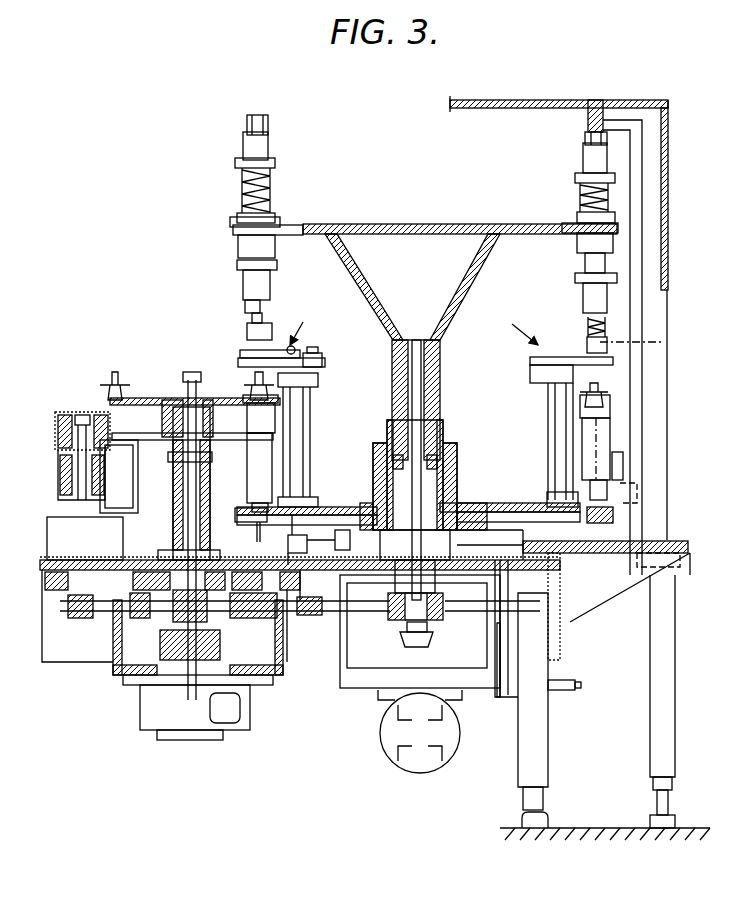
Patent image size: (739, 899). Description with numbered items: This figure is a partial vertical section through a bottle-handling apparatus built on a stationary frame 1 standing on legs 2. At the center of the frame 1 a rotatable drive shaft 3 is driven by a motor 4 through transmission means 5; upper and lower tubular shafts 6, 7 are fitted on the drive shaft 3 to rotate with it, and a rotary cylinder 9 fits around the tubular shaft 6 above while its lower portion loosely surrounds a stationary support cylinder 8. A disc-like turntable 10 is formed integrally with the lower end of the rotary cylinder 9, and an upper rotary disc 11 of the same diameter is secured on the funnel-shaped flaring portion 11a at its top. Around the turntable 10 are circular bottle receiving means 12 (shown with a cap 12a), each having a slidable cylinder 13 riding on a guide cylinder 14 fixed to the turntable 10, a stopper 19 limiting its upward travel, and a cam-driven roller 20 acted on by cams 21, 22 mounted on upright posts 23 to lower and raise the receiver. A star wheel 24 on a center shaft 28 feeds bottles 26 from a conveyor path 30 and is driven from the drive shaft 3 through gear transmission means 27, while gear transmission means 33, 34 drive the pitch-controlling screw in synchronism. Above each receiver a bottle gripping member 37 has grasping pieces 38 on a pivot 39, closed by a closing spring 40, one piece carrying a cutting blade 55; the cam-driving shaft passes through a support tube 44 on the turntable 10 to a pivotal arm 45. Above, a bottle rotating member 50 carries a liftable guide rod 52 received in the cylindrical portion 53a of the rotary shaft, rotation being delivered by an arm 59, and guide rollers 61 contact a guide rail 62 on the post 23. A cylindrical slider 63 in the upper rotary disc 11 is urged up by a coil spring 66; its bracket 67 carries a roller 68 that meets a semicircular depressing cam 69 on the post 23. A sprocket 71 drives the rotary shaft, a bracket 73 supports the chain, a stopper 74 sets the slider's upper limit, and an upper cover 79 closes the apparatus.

The stationary frame 1 is at (565, 560).
The legs 2 is at (650, 748).
The rotatable drive shaft 3 is at (395, 605).
The motor 4 is at (395, 735).
The transmission means 5 is at (430, 636).
The upper tubular shaft 6 is at (422, 377).
The lower tubular shaft 7 is at (445, 472).
The stationary support cylinder 8 is at (368, 503).
The rotary cylinder 9 is at (392, 392).
The turntable 10 is at (357, 507).
The upper rotary disc 11 is at (462, 224).
The funnel-shaped flaring portion 11a is at (476, 284).
The bottle receiving means 12 is at (272, 470).
The cylinder head 12a is at (276, 430).
The slidable cylinder 13 is at (255, 452).
The guide cylinder 14 is at (268, 496).
The stopper 19 is at (605, 545).
The cam-driven roller 20 is at (250, 522).
The cam 21 is at (232, 470).
The cam 22 is at (640, 496).
The upright posts 23 is at (645, 404).
The star wheel 24 is at (145, 400).
The bottles 26 is at (122, 385).
The gear transmission means 27 is at (120, 655).
The center shaft 28 is at (185, 500).
The conveyor path 30 is at (120, 440).
The gear transmission means 33 is at (85, 620).
The gear transmission means 34 is at (86, 413).
The bottle gripping member 37 is at (414, 326).
The grasping pieces 38 is at (291, 345).
The pivot 39 is at (316, 349).
The closing spring 40 is at (590, 340).
The support tube 44 is at (300, 408).
The pivotal arm 45 is at (322, 600).
The bottle rotating member 50 is at (248, 331).
The liftable guide rod 52 is at (247, 307).
The cylindrical portion 53a is at (240, 250).
The cutting blade 55 is at (240, 360).
The arm 59 is at (277, 265).
The position-correcting guide rollers 61 is at (243, 286).
The guide rail 62 is at (650, 349).
The cylindrical slider 63 is at (268, 182).
The coil spring 66 is at (242, 180).
The bracket 67 is at (268, 146).
The cam-driven roller 68 is at (256, 115).
The semicircular depressing cam 69 is at (590, 112).
The sprocket 71 is at (583, 294).
The bracket 73 is at (622, 280).
The stopper 74 is at (575, 274).
The upper cover 79 is at (526, 86).